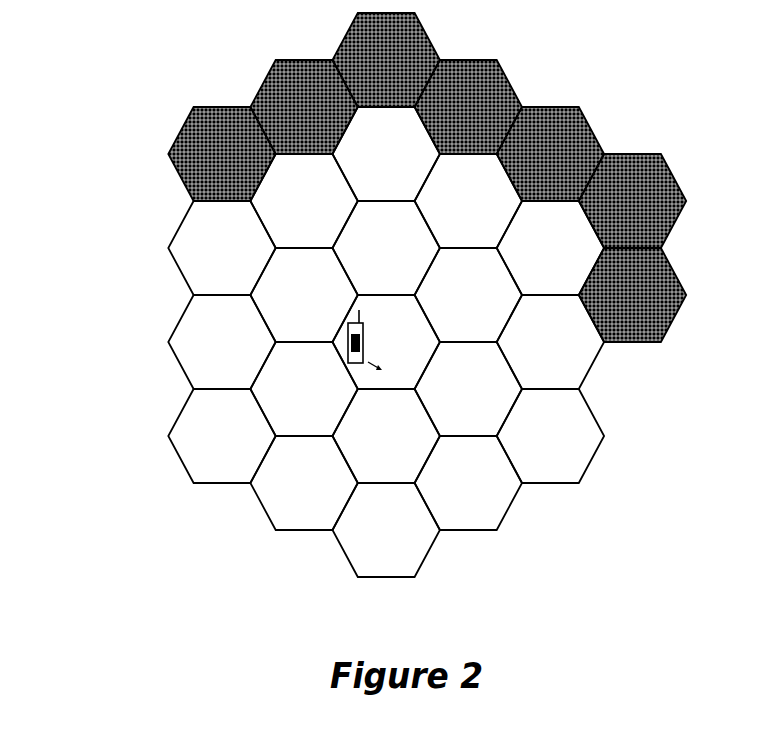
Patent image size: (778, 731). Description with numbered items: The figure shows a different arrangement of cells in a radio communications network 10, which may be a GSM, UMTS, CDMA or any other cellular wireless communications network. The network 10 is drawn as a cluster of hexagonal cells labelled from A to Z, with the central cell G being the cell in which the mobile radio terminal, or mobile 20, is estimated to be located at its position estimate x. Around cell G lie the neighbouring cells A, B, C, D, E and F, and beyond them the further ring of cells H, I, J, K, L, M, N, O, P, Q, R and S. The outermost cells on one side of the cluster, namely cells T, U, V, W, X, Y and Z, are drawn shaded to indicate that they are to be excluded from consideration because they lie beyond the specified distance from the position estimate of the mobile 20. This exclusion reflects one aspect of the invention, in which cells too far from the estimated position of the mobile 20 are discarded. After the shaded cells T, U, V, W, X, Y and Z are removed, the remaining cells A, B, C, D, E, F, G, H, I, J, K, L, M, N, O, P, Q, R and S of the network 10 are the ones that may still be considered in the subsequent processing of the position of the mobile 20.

The radio communications network 10 is at (357, 295).
The mobile 20 is at (346, 343).
The cell A is at (386, 248).
The cell B is at (468, 295).
The cell C is at (468, 389).
The cell D is at (386, 436).
The cell E is at (303, 389).
The cell F is at (303, 295).
The cell G is at (386, 342).
The cell H is at (303, 201).
The cell I is at (386, 154).
The cell J is at (468, 201).
The cell K is at (550, 248).
The cell L is at (550, 342).
The cell M is at (550, 436).
The cell N is at (468, 483).
The cell O is at (386, 530).
The cell P is at (303, 483).
The cell Q is at (221, 436).
The cell R is at (221, 342).
The cell S is at (221, 248).
The cell T is at (221, 154).
The cell U is at (303, 107).
The cell V is at (386, 60).
The cell W is at (468, 107).
The cell X is at (550, 154).
The cell Y is at (632, 201).
The cell Z is at (632, 295).